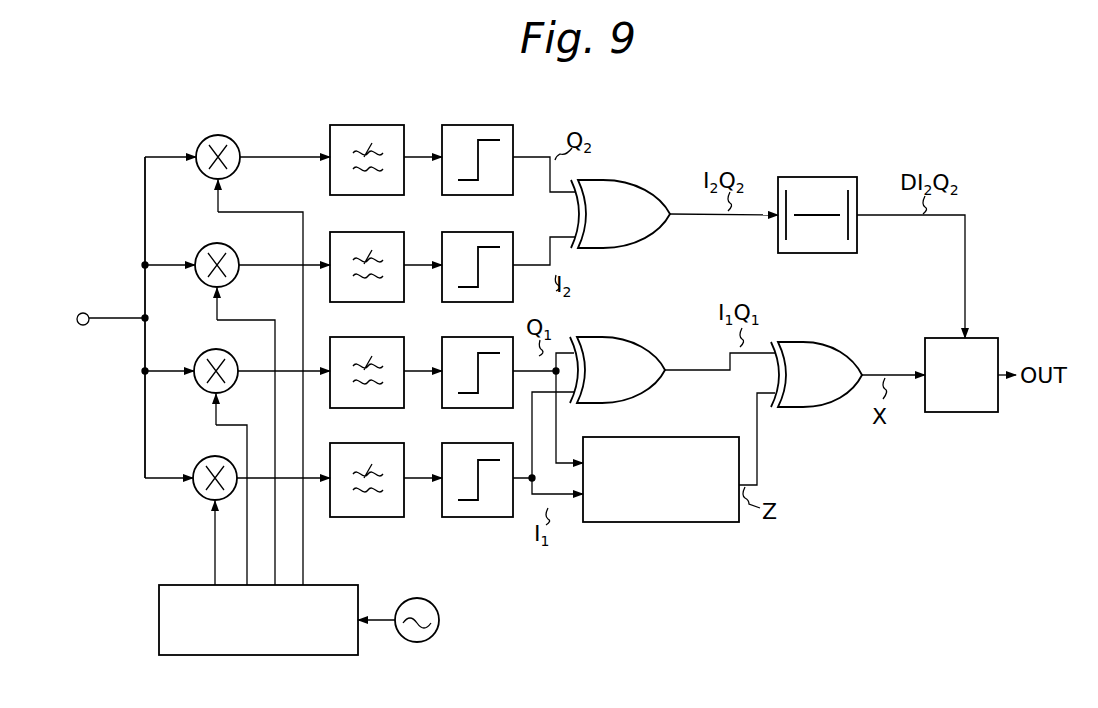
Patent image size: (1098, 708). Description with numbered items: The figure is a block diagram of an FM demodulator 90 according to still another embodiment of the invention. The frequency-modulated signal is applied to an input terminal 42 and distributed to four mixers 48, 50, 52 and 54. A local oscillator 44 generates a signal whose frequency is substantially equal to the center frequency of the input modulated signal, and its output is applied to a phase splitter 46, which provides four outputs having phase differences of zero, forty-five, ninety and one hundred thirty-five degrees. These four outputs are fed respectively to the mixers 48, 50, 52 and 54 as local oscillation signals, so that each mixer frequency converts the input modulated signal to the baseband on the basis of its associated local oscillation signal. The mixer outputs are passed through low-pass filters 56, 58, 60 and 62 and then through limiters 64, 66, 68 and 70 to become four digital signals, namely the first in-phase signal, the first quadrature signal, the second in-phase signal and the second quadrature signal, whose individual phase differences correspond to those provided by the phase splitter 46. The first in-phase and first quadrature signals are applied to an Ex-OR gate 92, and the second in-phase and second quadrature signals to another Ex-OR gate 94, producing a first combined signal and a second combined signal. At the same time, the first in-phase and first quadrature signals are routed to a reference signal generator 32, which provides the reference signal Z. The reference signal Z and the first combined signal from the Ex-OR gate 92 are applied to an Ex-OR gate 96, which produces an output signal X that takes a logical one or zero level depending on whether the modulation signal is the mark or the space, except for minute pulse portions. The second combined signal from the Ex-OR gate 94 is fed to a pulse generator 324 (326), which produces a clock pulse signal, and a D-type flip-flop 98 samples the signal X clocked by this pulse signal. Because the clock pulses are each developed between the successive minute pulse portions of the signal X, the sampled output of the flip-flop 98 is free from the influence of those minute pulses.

The FM demodulator 90 is at (124, 149).
The input terminal 42 is at (86, 313).
The mixer 54 is at (205, 176).
The mixer 52 is at (207, 289).
The mixer 50 is at (205, 391).
The mixer 48 is at (204, 501).
The phase splitter 46 is at (331, 585).
The local oscillator 44 is at (442, 612).
The low-pass filter 62 is at (369, 125).
The low-pass filter 60 is at (363, 232).
The low-pass filter 58 is at (363, 337).
The low-pass filter 56 is at (363, 443).
The limiter 70 is at (478, 125).
The limiter 68 is at (473, 232).
The limiter 66 is at (468, 337).
The limiter 64 is at (468, 443).
The Ex-OR gate 94 is at (641, 178).
The Ex-OR gate 92 is at (625, 336).
The Ex-OR gate 96 is at (803, 336).
The pulse generator 324 is at (871, 230).
The pulse generator 326 is at (828, 174).
The D-type flip-flop 98 is at (963, 412).
The reference signal generator 32 is at (668, 522).